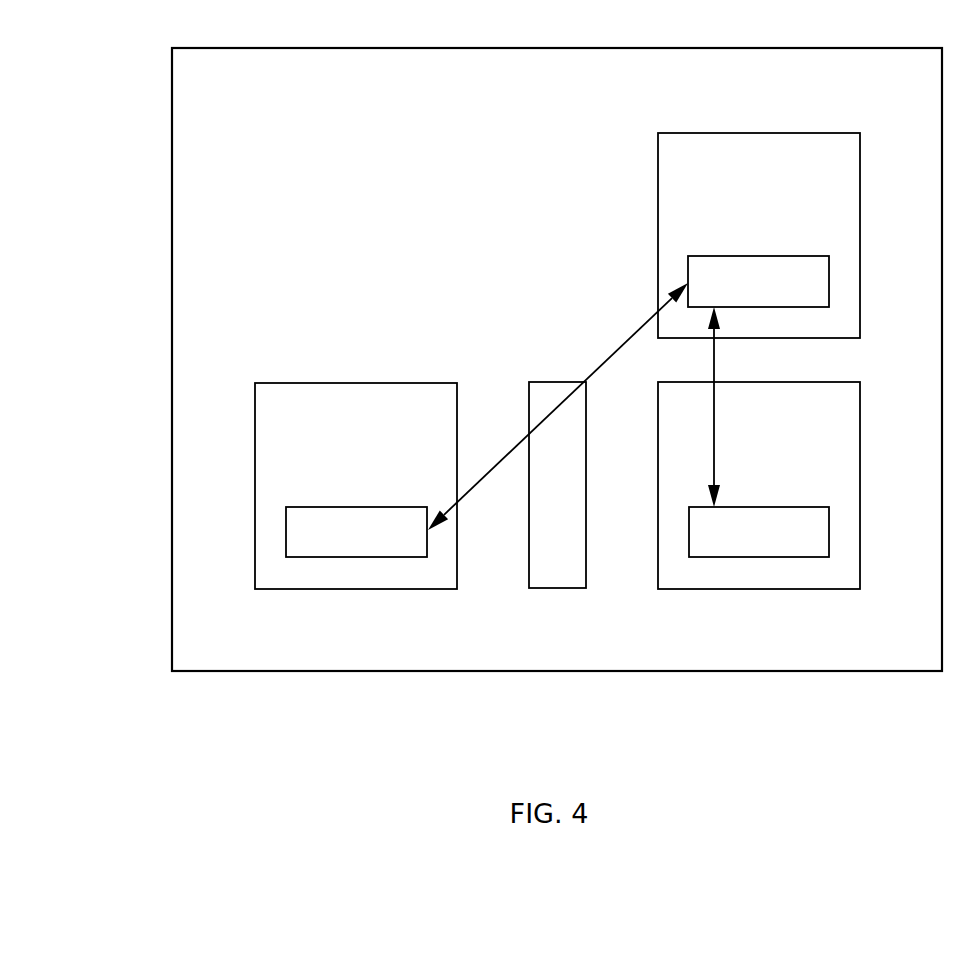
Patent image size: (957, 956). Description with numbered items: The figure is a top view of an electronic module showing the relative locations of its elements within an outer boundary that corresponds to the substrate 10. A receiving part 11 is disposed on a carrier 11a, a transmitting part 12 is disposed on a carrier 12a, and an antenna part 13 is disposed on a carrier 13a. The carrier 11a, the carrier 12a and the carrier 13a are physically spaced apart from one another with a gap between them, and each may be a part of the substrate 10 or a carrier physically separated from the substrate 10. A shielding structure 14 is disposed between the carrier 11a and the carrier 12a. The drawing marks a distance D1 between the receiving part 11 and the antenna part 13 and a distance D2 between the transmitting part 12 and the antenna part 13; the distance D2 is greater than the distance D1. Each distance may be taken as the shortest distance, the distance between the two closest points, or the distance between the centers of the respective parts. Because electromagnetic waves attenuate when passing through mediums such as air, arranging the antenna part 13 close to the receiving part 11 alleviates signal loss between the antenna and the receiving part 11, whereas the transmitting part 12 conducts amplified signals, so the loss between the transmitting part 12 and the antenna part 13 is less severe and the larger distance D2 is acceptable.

The substrate 10 is at (183, 364).
The receiving part 11 is at (759, 532).
The carrier 11a is at (759, 485).
The transmitting part 12 is at (356, 532).
The carrier 12a is at (356, 486).
The antenna part 13 is at (758, 281).
The carrier 13a is at (759, 235).
The shielding structure 14 is at (557, 485).
The distance D1 is at (697, 407).
The distance D2 is at (558, 406).